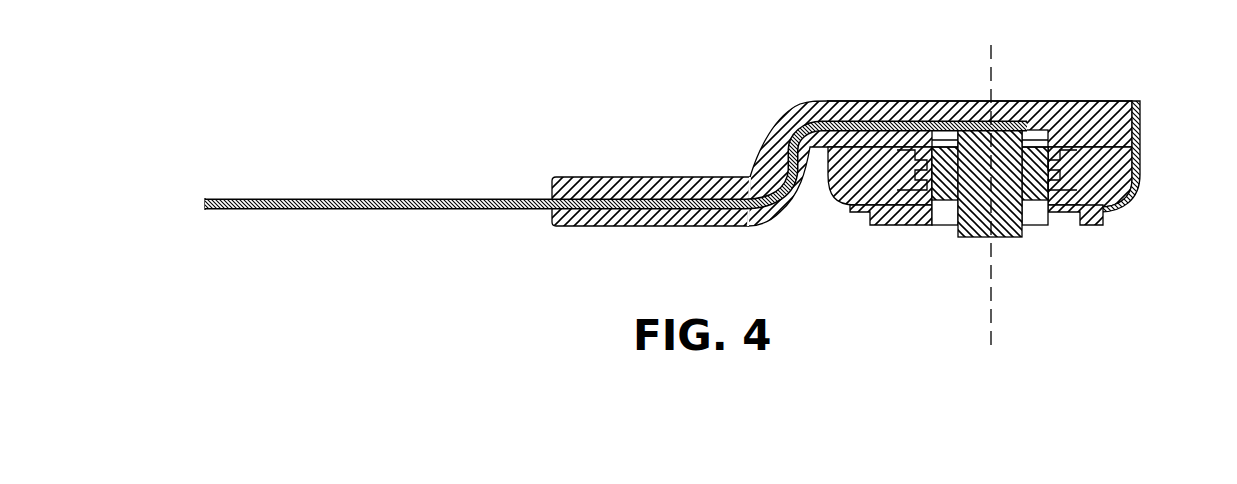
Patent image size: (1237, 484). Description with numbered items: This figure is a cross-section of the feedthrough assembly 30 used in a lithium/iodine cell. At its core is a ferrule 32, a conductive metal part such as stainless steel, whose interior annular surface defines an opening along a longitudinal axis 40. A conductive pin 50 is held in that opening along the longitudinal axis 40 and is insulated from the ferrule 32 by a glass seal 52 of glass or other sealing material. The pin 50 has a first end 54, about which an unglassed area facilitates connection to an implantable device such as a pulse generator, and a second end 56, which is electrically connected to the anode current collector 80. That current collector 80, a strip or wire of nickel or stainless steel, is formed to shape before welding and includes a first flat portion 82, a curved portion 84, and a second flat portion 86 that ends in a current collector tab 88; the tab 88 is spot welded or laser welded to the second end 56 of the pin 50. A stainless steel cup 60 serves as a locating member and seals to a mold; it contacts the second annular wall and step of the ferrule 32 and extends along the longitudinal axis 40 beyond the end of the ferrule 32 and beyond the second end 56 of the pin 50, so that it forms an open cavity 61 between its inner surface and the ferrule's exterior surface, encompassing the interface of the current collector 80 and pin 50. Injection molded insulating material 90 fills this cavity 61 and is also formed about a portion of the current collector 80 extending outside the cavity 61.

The feedthrough assembly 30 is at (722, 95).
The ferrule 32 is at (1104, 214).
The longitudinal axis 40 is at (991, 56).
The pin 50 is at (1010, 238).
The glass seal 52 is at (937, 226).
The first end 54 is at (975, 238).
The second end 56 is at (942, 110).
The cup 60 is at (1134, 193).
The open cavity 61 is at (1140, 142).
The current collector 80 is at (330, 183).
The first flat portion 82 is at (422, 210).
The curved portion 84 is at (780, 207).
The second flat portion 86 is at (873, 105).
The current collector tab 88 is at (1004, 108).
The insulating material 90 is at (608, 188).